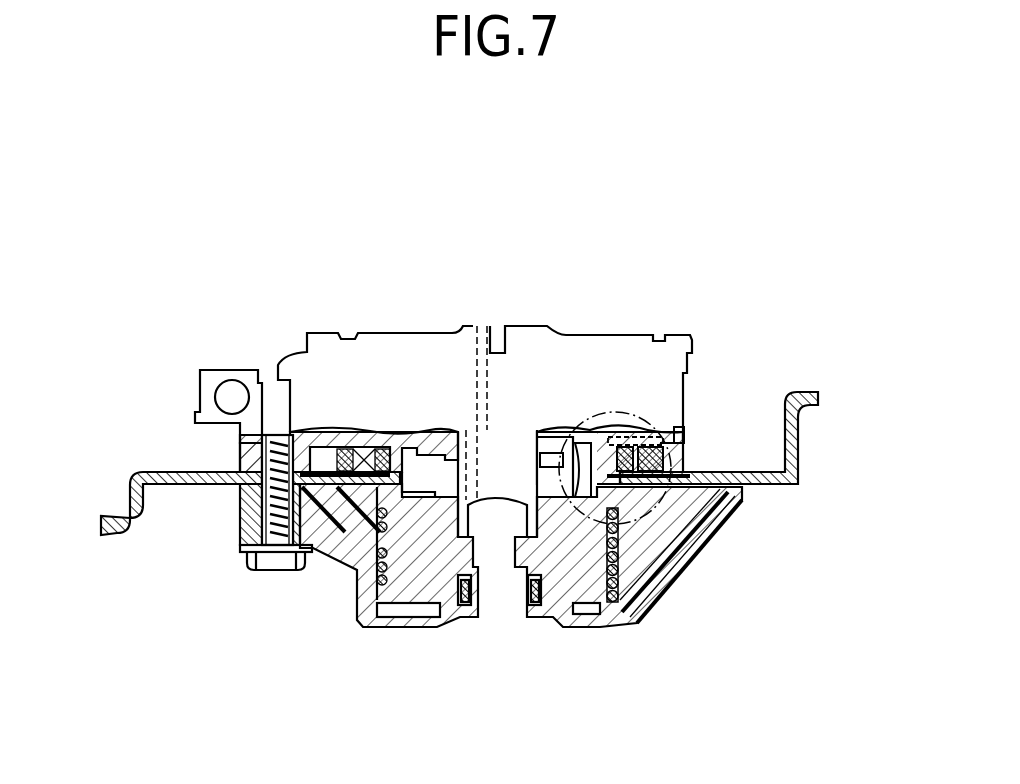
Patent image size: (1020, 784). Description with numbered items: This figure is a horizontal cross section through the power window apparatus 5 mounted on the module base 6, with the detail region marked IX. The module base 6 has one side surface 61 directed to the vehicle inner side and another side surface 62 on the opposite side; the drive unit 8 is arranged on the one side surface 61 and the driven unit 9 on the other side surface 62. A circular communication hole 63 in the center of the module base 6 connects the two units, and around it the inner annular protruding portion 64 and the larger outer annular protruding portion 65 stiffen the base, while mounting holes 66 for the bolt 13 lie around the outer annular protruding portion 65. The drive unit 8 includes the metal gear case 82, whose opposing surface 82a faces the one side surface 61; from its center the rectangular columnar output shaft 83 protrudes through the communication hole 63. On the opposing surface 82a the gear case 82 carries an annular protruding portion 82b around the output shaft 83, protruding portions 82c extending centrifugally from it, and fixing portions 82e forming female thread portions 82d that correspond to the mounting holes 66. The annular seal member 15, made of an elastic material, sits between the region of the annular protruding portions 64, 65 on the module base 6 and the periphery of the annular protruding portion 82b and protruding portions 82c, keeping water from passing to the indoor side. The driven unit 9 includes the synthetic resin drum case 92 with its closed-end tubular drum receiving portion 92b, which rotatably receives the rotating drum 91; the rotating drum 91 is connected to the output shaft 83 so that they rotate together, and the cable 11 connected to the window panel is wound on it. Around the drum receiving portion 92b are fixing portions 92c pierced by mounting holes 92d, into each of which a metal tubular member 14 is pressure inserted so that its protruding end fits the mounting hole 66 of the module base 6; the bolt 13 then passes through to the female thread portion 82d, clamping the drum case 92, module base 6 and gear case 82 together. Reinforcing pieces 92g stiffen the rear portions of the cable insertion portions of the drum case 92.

The power window apparatus 5 is at (797, 345).
The module base 6 is at (815, 471).
The drive unit 8 is at (700, 325).
The driven unit 9 is at (747, 563).
The cable 11 is at (600, 515).
The bolt 13 is at (275, 573).
The tubular member 14 is at (238, 551).
The seal member 15 is at (672, 463).
The one side surface 61 is at (158, 472).
The another side surface 62 is at (175, 486).
The communication hole 63 is at (587, 462).
The inner annular protruding portion 64 is at (377, 452).
The outer annular protruding portion 65 is at (355, 450).
The mounting hole 66 is at (240, 455).
The gear case 82 is at (686, 395).
The opposing surface 82a is at (680, 445).
The annular protruding portion 82b is at (425, 458).
The protruding portion 82c is at (640, 450).
The female thread portion 82d is at (275, 433).
The fixing portion 82e is at (240, 438).
The output shaft 83 is at (550, 462).
The rotating drum 91 is at (577, 620).
The drum case 92 is at (410, 627).
The drum receiving portion 92b is at (356, 592).
The fixing portion 92c is at (240, 540).
The mounting hole 92d is at (240, 527).
The reinforcing piece 92g is at (690, 578).
The section detail circle IX is at (668, 398).